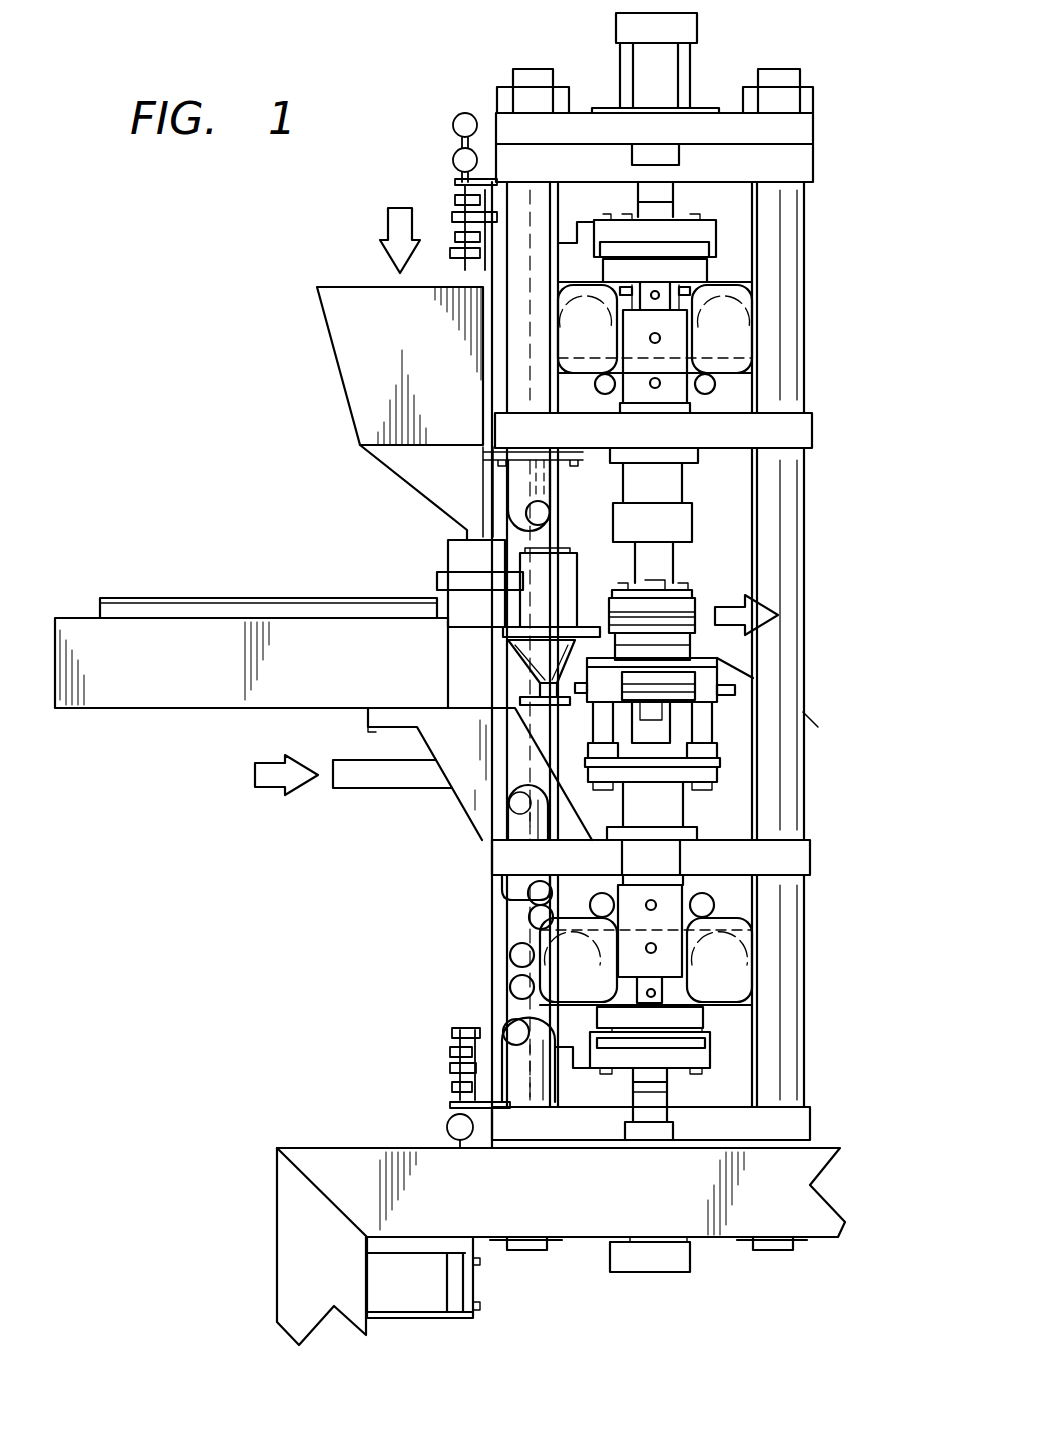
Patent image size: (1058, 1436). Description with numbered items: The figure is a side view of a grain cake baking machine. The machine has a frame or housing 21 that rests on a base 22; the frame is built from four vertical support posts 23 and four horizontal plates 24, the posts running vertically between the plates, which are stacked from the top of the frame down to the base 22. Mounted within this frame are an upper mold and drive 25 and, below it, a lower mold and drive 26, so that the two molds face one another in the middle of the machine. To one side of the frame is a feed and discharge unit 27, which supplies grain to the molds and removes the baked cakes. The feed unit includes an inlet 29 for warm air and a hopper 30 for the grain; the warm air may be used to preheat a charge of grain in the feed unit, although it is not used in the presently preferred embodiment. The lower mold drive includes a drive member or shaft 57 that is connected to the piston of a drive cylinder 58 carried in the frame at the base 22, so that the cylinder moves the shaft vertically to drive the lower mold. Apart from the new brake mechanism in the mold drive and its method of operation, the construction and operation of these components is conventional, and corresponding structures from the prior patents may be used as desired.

The frame or housing 21 is at (843, 290).
The base 22 is at (833, 1202).
The vertical support posts 23 is at (512, 1060).
The horizontal plates 24 is at (808, 163).
The upper mold and drive 25 is at (730, 558).
The lower mold and drive 26 is at (727, 802).
The feed and discharge unit 27 is at (233, 648).
The inlet 29 is at (365, 777).
The hopper 30 is at (360, 345).
The drive member or shaft 57 is at (645, 1092).
The drive cylinder 58 is at (647, 1265).